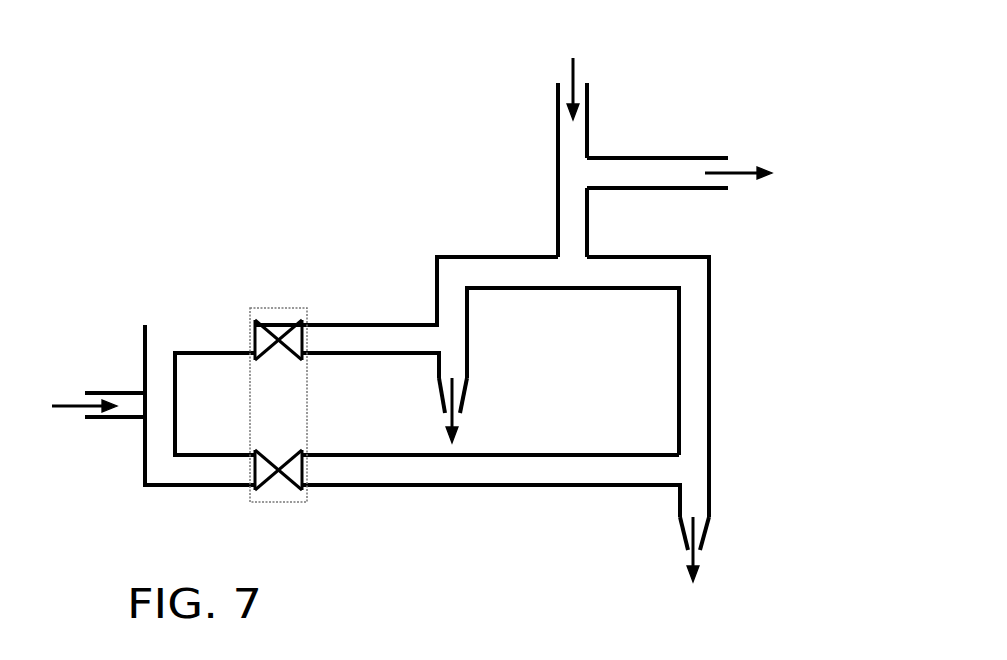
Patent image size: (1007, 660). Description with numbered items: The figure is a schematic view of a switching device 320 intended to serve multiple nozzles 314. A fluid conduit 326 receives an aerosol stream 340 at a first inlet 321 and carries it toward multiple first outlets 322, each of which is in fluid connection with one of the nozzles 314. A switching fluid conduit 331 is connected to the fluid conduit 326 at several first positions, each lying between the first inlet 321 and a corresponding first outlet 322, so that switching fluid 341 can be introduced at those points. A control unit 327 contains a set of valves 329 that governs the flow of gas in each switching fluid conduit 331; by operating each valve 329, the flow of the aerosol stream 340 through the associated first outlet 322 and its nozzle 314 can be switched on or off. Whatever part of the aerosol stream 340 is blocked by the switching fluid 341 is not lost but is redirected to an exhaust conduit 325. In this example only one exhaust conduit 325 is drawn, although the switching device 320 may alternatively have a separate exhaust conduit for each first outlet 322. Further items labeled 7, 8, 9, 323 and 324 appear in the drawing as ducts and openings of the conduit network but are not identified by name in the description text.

The switching device 320 is at (296, 164).
The first inlet duct 7 is at (118, 393).
The second inlet duct 8 is at (588, 95).
The outlet duct 9 is at (707, 157).
The nozzle 314 is at (467, 392).
The first inlet 321 is at (578, 133).
The first outlet 322 is at (452, 367).
The inlet opening 323 is at (133, 408).
The bypass branch 324 is at (714, 188).
The exhaust conduit 325 is at (667, 158).
The fluid conduit 326 is at (557, 160).
The control unit 327 is at (245, 387).
The valve 329 is at (300, 362).
The switching fluid conduit 331 is at (355, 323).
The aerosol stream 340 is at (573, 72).
The switching fluid 341 is at (68, 408).